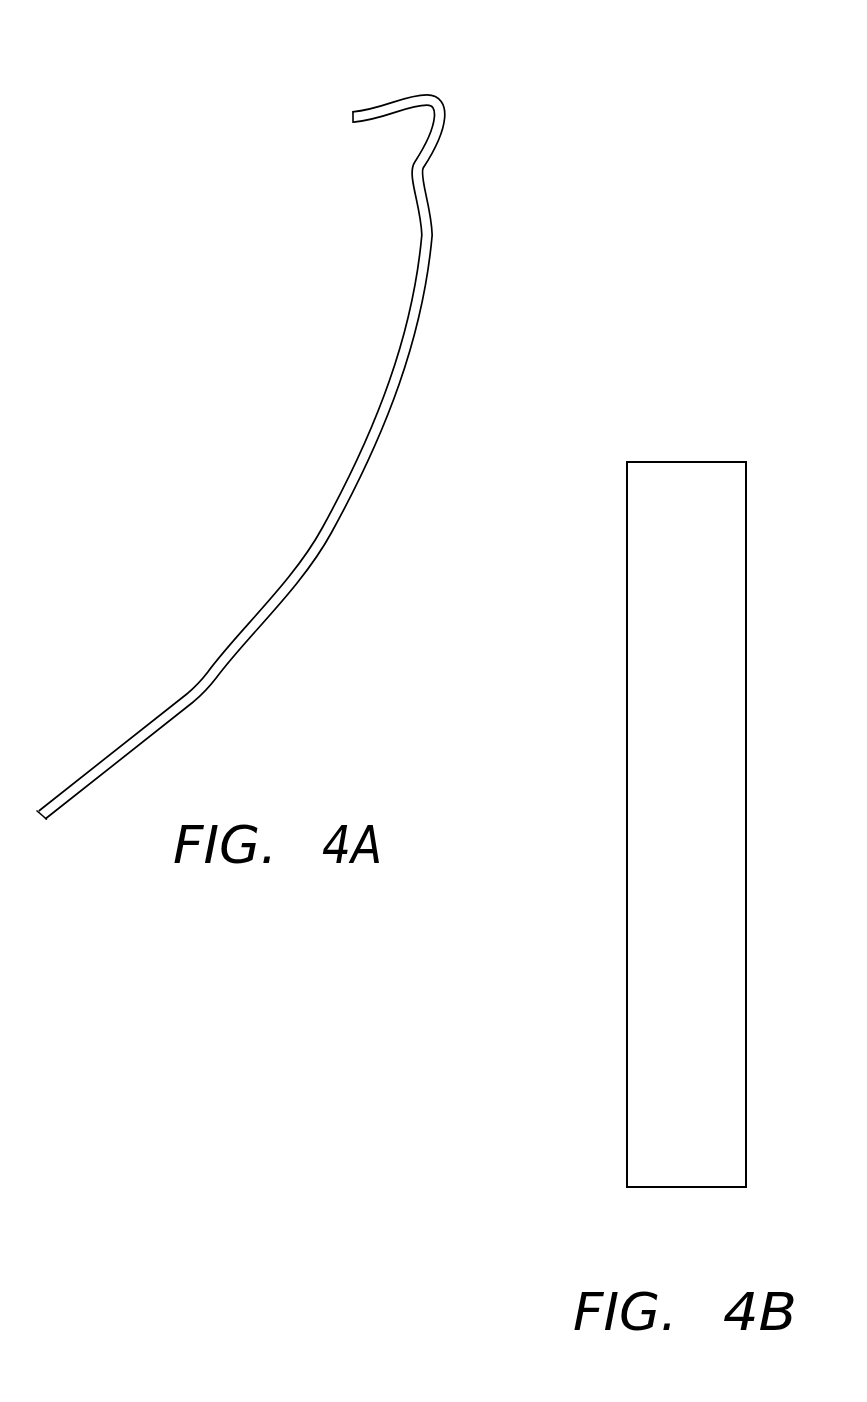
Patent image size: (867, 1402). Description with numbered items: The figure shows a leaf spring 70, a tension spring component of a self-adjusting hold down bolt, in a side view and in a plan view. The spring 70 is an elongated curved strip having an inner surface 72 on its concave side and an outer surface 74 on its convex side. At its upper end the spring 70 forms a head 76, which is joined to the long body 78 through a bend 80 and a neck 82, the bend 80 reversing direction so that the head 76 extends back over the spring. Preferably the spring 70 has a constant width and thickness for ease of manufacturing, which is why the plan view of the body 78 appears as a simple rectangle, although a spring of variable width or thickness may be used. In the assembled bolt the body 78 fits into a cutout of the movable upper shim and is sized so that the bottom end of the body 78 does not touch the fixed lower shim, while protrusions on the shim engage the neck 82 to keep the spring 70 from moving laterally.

In FIG. 4A, the leaf spring 70 is at (292, 420).
In FIG. 4A, the inner surface 72 is at (241, 638).
In FIG. 4A, the outer surface 74 is at (207, 693).
In FIG. 4A, the head 76 is at (386, 108).
In FIG. 4A, the body 78 is at (238, 420).
In FIG. 4B, the body 78 is at (652, 1046).
In FIG. 4A, the bend 80 is at (441, 117).
In FIG. 4A, the neck 82 is at (419, 169).